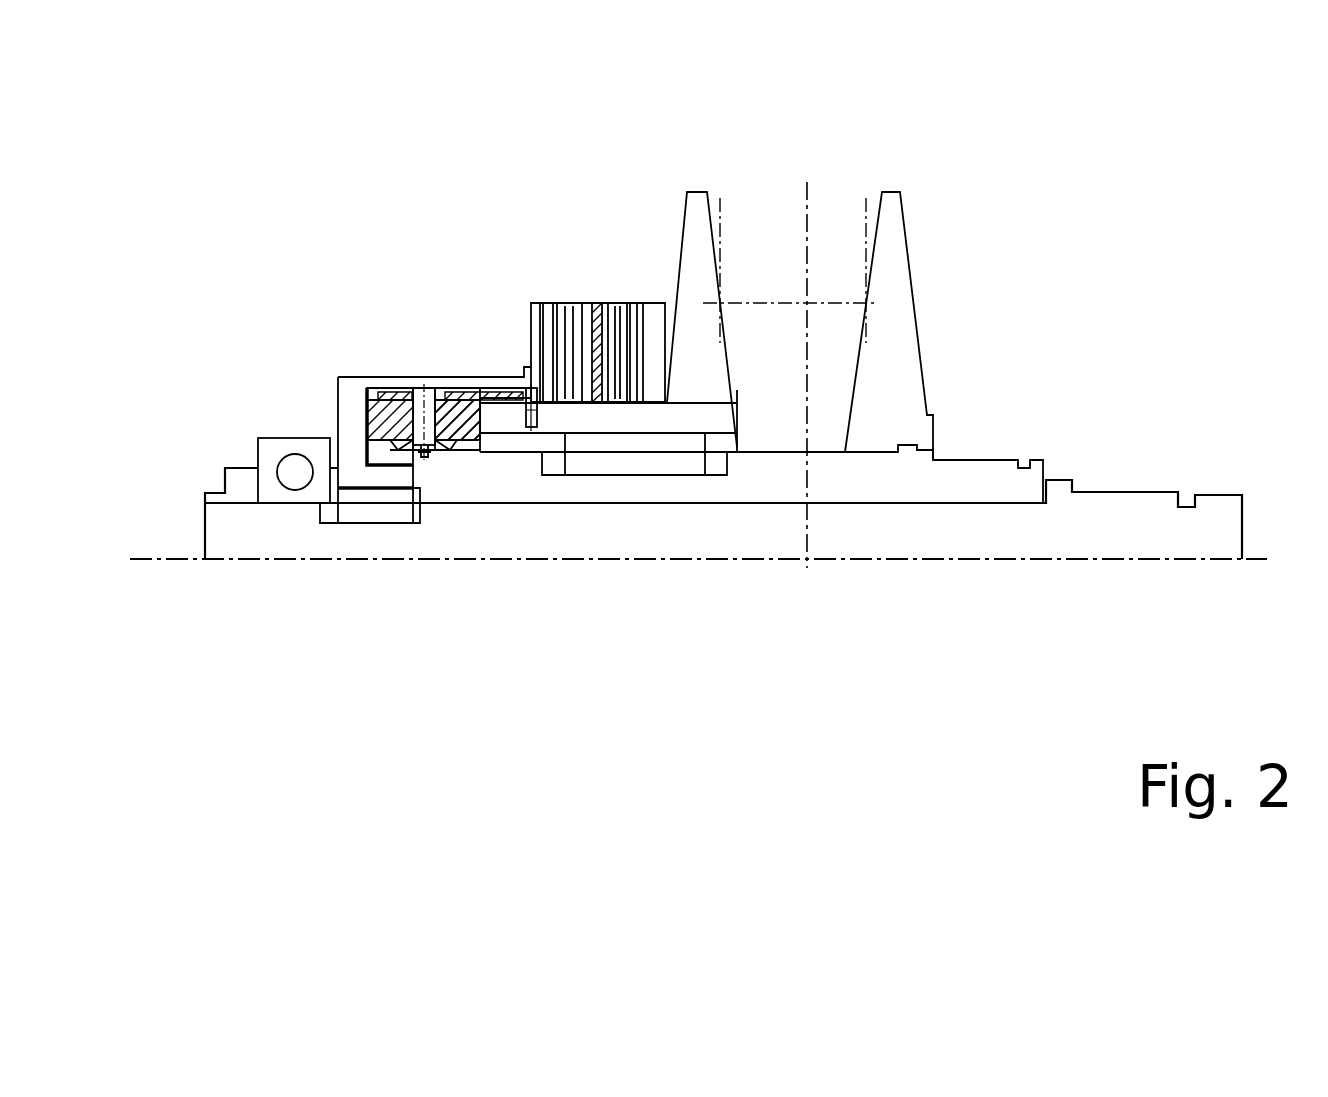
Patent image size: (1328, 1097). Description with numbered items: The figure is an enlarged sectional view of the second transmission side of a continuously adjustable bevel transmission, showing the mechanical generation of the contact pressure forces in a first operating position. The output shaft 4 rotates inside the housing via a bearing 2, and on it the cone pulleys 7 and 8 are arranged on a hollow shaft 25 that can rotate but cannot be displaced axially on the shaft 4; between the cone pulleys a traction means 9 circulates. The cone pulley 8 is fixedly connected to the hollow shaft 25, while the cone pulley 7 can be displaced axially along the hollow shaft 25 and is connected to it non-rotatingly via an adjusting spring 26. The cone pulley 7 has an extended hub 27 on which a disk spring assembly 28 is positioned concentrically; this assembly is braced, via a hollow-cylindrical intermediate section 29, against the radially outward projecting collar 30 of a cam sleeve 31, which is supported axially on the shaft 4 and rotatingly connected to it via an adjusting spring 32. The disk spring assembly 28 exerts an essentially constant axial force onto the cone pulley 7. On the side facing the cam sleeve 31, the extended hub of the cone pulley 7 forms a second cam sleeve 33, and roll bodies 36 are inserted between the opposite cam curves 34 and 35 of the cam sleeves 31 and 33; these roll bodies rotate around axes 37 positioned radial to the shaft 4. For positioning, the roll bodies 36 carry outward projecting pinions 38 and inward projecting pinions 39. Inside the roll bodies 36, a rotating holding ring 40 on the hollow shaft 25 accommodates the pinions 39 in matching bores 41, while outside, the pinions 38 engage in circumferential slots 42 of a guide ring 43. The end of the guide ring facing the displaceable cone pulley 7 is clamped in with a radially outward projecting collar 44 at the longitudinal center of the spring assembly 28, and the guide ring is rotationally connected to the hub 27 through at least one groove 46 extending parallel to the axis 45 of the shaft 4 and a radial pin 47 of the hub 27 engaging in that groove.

The bearing 2 is at (278, 455).
The shaft 4 is at (1145, 535).
The cone pulley 7 is at (690, 200).
The cone pulley 8 is at (897, 330).
The traction means 9 is at (787, 193).
The hollow shaft 25 is at (975, 467).
The adjusting spring 26 is at (700, 473).
The extended hub 27 is at (677, 462).
The disk spring assembly 28 is at (627, 300).
The hollow-cylindrical intermediate section 29 is at (462, 378).
The collar 30 is at (343, 377).
The cam sleeve 31 is at (350, 422).
The adjusting spring 32 is at (352, 507).
The cam sleeve 33 is at (503, 417).
The cam curve 34 is at (370, 420).
The cam curve 35 is at (487, 410).
The roll body 36 is at (400, 430).
The axis 37 is at (425, 393).
The outward projecting pinion 38 is at (425, 398).
The inward projecting pinion 39 is at (395, 447).
The holding ring 40 is at (448, 450).
The bore 41 is at (424, 458).
The circumferential slot 42 is at (397, 390).
The guide ring 43 is at (490, 378).
The collar 44 is at (595, 300).
The axis 45 is at (1005, 565).
The groove 46 is at (645, 413).
The radial pin 47 is at (577, 397).